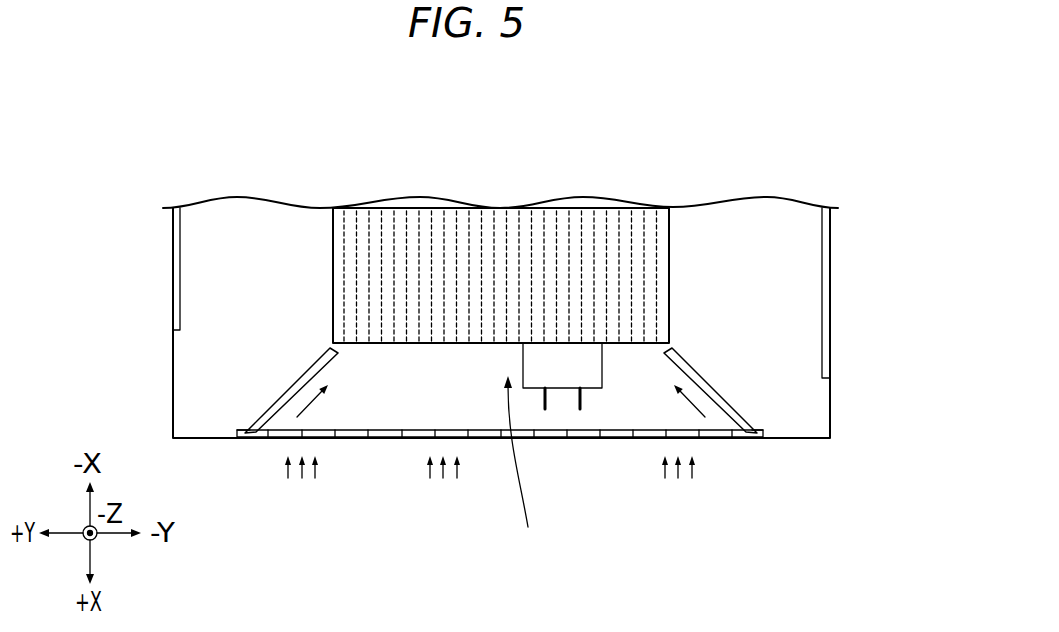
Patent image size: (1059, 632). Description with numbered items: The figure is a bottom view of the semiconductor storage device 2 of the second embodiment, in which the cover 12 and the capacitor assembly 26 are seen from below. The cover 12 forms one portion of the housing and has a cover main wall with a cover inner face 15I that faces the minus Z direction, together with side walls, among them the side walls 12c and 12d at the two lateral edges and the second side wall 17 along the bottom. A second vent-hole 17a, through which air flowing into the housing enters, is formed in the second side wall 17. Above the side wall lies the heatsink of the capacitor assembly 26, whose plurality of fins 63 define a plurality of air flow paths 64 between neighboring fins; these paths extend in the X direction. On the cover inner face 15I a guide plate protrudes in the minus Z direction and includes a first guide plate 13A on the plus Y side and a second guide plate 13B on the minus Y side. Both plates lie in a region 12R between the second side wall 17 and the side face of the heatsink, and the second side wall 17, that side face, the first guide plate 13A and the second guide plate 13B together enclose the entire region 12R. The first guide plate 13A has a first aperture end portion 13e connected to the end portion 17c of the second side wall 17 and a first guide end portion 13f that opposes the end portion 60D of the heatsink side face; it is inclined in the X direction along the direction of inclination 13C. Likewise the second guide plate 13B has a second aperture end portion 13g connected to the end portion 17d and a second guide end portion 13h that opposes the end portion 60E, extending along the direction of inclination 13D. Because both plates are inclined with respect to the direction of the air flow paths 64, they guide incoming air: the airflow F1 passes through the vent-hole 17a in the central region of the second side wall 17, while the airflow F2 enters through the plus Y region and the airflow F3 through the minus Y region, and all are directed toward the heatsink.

The semiconductor storage device 2 is at (437, 126).
The cover 12 is at (850, 221).
The side wall 12d is at (178, 262).
The side wall 12c is at (832, 262).
The cover inner face 15I is at (787, 308).
The capacitor assembly 26 is at (601, 219).
The end portion of the side face of the heatsink 60D is at (333, 343).
The end portion of the side face of the heatsink 60E is at (671, 348).
The fins 63 is at (438, 344).
The air flow paths 64 is at (477, 333).
The first guide plate 13A is at (307, 375).
The second guide plate 13B is at (717, 397).
The second side wall 17 is at (520, 440).
The second vent-hole 17a is at (558, 436).
The end portion of the second side wall 17c is at (243, 443).
The end portion of the second side wall 17d is at (753, 440).
The first aperture end portion 13e is at (262, 435).
The first guide end portion 13f is at (340, 350).
The second aperture end portion 13g is at (733, 438).
The second guide end portion 13h is at (667, 353).
The direction of inclination 13C is at (310, 405).
The direction of inclination 13D is at (685, 400).
The airflow F1 is at (430, 478).
The airflow F2 is at (317, 476).
The airflow F3 is at (660, 480).
The region 12R is at (527, 467).